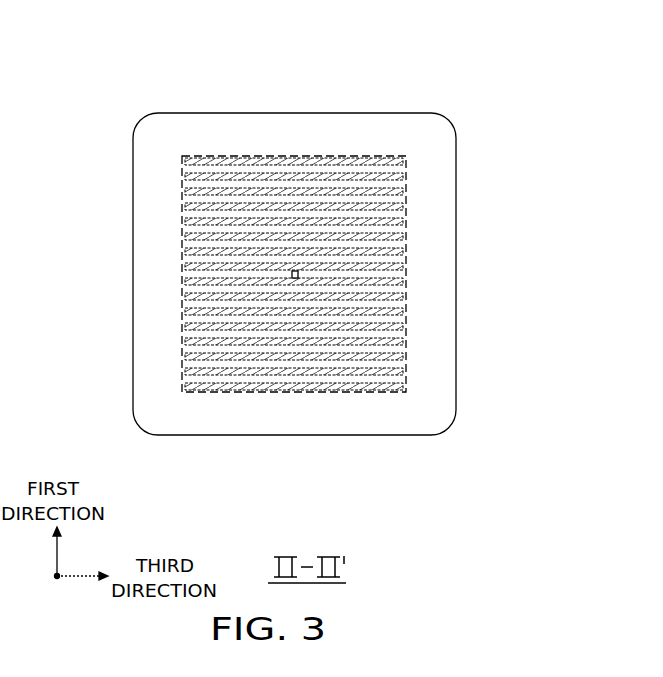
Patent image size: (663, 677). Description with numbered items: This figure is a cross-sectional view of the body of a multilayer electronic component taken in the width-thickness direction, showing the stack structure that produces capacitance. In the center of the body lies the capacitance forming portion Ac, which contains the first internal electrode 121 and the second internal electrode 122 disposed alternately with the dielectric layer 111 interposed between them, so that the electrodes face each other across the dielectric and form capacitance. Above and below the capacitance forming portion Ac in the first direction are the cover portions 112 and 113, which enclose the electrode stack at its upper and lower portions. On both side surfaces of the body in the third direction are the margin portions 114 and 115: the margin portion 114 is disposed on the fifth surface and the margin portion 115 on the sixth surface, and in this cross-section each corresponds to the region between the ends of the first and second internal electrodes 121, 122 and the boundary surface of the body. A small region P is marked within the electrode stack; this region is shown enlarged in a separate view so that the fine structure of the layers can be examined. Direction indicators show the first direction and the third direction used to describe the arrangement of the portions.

The dielectric layer 111 is at (225, 183).
The cover portion 112 is at (285, 119).
The cover portion 113 is at (280, 428).
The margin portion 114 is at (146, 250).
The margin portion 115 is at (445, 250).
The first internal electrode 121 is at (358, 162).
The second internal electrode 122 is at (378, 177).
The capacitance forming portion Ac is at (415, 335).
The region P is at (291, 275).